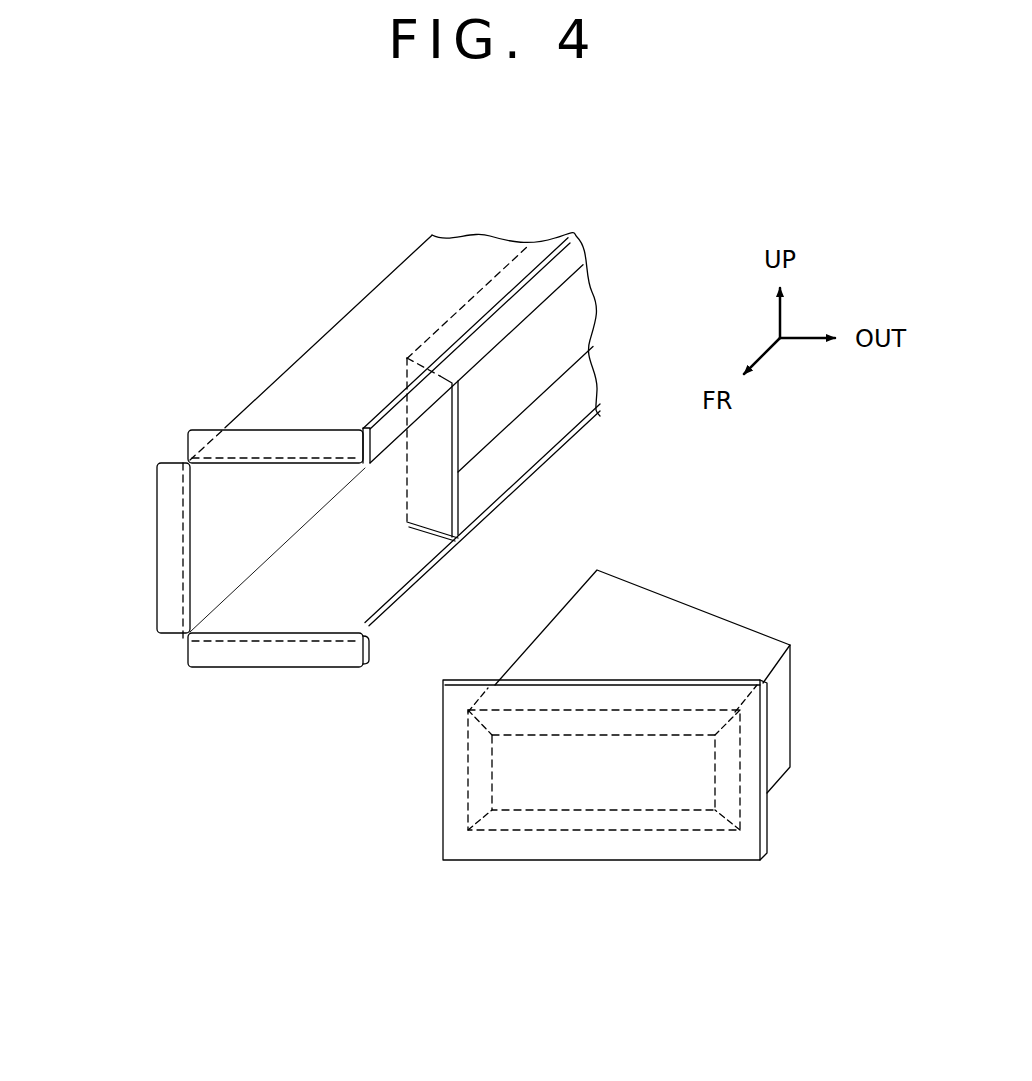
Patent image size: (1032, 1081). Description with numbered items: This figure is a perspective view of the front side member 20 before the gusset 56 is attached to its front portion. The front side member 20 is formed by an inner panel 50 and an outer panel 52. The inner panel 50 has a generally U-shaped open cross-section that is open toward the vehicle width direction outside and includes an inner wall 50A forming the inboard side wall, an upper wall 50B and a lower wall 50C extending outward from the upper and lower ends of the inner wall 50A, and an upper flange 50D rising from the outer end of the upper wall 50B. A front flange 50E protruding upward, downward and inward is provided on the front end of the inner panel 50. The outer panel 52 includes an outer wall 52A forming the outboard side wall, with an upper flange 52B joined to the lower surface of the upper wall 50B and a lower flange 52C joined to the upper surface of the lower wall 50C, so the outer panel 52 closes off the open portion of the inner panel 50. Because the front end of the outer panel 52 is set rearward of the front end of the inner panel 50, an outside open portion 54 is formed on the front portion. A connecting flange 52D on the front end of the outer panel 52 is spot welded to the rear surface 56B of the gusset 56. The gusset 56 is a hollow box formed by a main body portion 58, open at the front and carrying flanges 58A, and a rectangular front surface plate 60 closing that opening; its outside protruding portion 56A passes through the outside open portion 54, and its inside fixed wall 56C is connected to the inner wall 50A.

The front side member 20 is at (341, 262).
The inner panel 50 is at (317, 340).
The inner wall 50A is at (183, 570).
The upper wall 50B is at (287, 390).
The lower wall 50C is at (290, 606).
The upper flange 50D is at (385, 407).
The front flange 50E is at (210, 430).
The outer panel 52 is at (572, 315).
The outer wall 52A is at (522, 380).
The upper flange 52B is at (580, 272).
The lower flange 52C is at (502, 467).
The connecting flange 52D is at (422, 478).
The outside open portion 54 is at (395, 552).
The gusset 56 is at (757, 562).
The outside protruding portion 56A is at (780, 727).
The rear surface 56B is at (660, 592).
The inside fixed wall 56C is at (537, 633).
The main body portion 58 is at (638, 743).
The flanges 58A is at (570, 822).
The front surface plate 60 is at (482, 862).